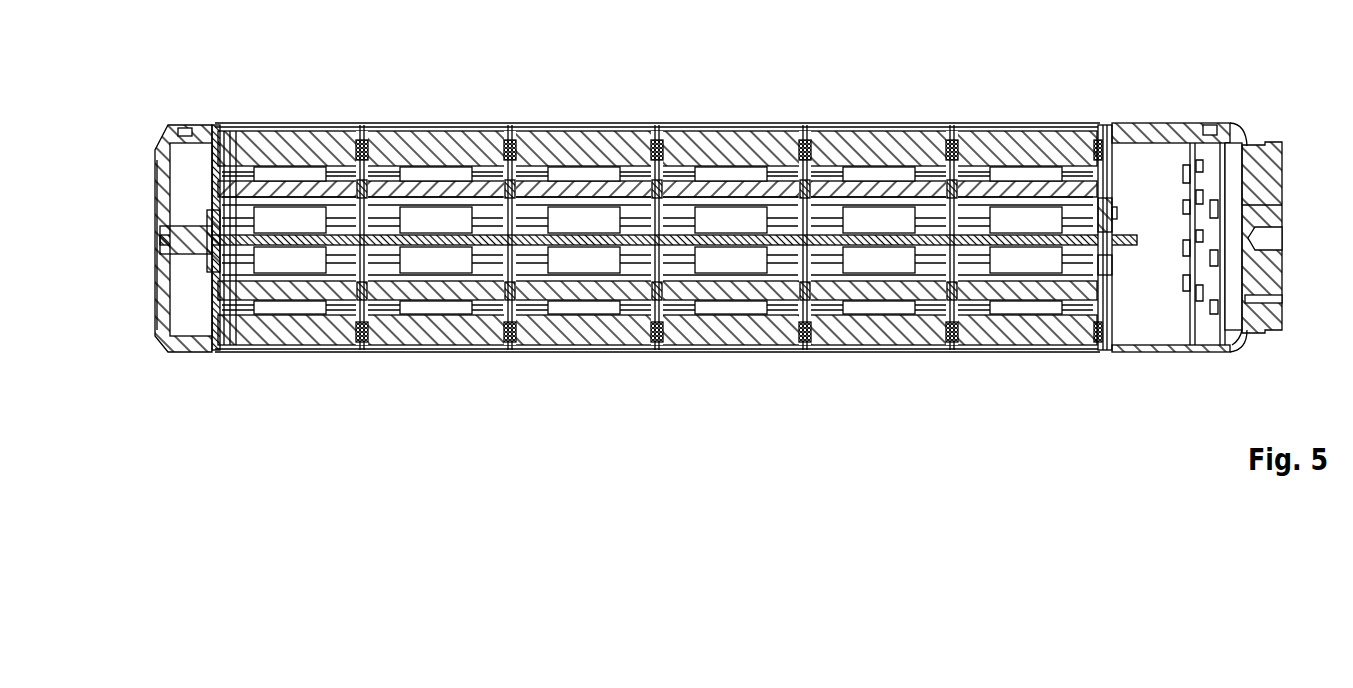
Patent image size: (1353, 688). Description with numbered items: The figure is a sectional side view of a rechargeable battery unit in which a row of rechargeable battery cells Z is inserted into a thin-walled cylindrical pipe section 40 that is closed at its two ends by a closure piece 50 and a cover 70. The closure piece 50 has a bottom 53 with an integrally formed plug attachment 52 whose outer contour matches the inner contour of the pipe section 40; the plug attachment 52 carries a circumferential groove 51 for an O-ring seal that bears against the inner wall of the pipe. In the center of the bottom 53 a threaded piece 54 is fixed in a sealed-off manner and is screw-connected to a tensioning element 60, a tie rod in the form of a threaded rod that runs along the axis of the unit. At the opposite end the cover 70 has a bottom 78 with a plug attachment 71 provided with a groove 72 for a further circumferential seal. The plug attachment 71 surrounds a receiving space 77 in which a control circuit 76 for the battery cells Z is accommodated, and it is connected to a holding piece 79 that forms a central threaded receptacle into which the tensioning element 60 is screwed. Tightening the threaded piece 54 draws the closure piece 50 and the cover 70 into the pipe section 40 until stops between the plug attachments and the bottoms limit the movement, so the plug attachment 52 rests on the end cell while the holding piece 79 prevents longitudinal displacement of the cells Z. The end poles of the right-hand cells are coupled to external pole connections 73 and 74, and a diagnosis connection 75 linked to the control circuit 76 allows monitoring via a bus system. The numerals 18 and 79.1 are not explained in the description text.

The tie rod 18 is at (237, 250).
The pipe section 40 is at (266, 124).
The closure piece 50 is at (152, 139).
The circumferential groove 51 is at (184, 127).
The plug attachment 52 is at (214, 124).
The bottom 53 is at (160, 176).
The threaded piece 54 is at (158, 238).
The tensioning element 60 is at (297, 243).
The cover 70 is at (1268, 132).
The plug attachment 71 is at (1168, 129).
The groove 72 is at (1210, 126).
The pole connection 73 is at (1277, 170).
The pole connection 74 is at (1277, 240).
The diagnosis connection 75 is at (1277, 299).
The control circuit 76 is at (1230, 335).
The receiving space 77 is at (1162, 313).
The bottom 78 is at (1277, 210).
The holding piece 79 is at (1109, 127).
The bearing 79.1 is at (1106, 272).
The rechargeable battery cell Z is at (319, 91).